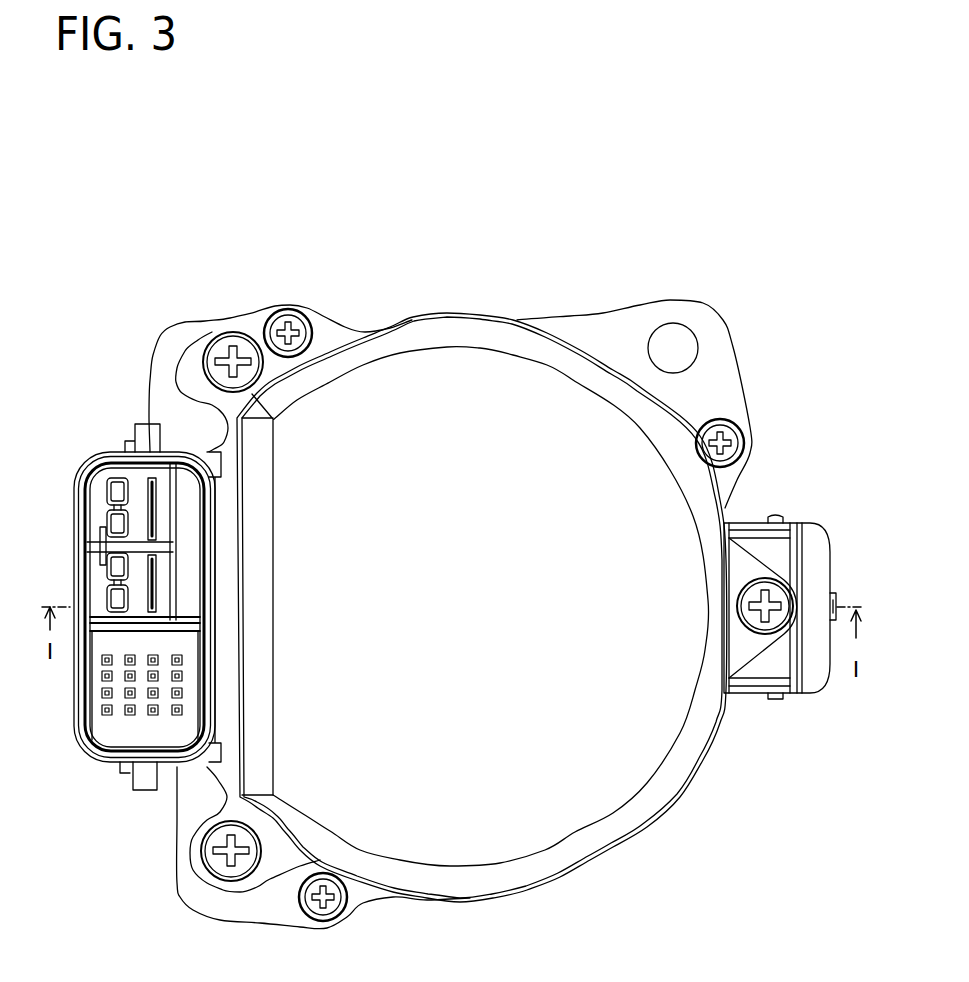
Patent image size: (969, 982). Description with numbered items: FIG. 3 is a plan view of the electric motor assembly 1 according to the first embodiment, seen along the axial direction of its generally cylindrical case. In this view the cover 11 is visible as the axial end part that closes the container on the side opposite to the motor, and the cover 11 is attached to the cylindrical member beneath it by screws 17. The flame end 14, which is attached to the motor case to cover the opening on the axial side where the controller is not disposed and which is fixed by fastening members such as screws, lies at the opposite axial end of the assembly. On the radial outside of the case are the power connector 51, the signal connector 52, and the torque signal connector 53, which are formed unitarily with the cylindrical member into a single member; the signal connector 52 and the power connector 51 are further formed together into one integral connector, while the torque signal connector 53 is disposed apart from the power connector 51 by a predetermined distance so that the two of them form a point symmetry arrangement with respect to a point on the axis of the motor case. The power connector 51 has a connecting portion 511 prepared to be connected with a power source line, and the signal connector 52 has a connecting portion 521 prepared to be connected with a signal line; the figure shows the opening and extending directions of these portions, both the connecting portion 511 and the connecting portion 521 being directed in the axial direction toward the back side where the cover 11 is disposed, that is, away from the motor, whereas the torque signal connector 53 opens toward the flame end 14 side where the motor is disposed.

The electric motor assembly 1 is at (623, 210).
The cover 11 is at (400, 372).
The flame end 14 is at (628, 322).
The screws 17 is at (235, 345).
The power connector 51 is at (74, 497).
The connecting portion 511 is at (110, 477).
The signal connector 52 is at (74, 706).
The connecting portion 521 is at (117, 740).
The torque signal connector 53 is at (800, 537).